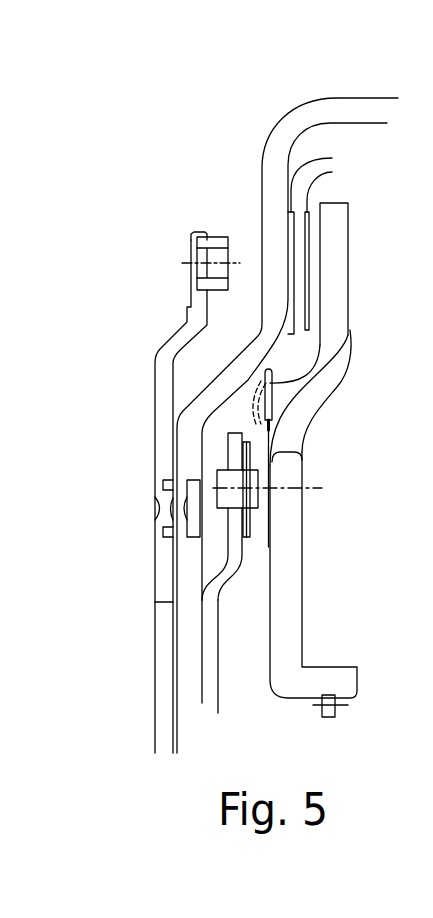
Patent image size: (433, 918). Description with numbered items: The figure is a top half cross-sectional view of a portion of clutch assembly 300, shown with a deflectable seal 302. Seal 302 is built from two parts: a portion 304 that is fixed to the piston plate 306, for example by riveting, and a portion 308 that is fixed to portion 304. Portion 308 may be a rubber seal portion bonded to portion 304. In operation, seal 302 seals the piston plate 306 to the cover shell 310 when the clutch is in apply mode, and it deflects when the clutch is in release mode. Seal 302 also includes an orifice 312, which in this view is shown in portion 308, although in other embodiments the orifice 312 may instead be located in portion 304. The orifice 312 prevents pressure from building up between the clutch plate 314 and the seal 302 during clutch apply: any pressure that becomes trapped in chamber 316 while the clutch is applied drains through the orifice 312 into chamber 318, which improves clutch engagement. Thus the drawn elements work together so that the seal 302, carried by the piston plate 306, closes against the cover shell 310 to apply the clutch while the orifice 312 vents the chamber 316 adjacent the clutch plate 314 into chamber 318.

The clutch assembly 300 is at (242, 177).
The deflectable seal 302 is at (300, 397).
The portion 304 is at (296, 457).
The piston plate 306 is at (286, 586).
The portion 308 is at (353, 333).
The cover shell 310 is at (185, 322).
The orifice 312 is at (241, 376).
The clutch plate 314 is at (297, 137).
The chamber 316 is at (305, 356).
The chamber 318 is at (260, 650).